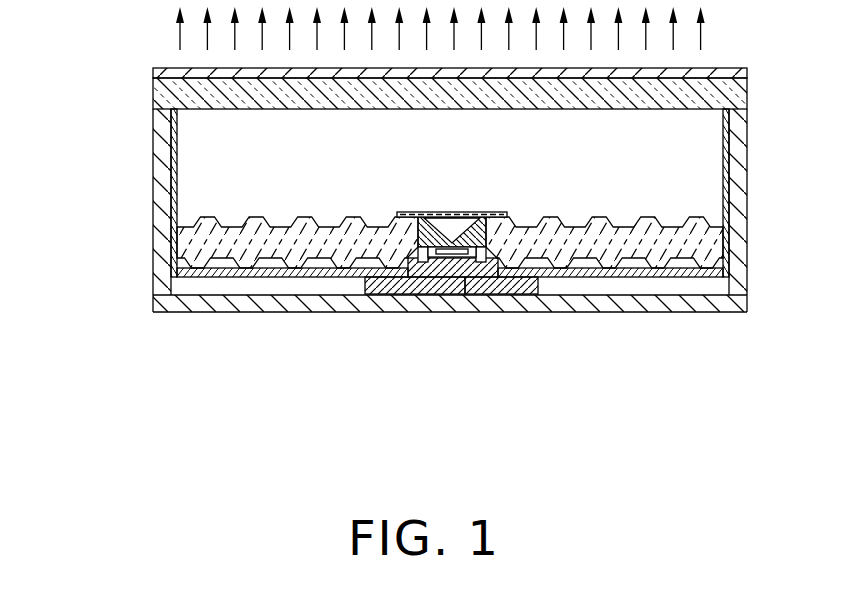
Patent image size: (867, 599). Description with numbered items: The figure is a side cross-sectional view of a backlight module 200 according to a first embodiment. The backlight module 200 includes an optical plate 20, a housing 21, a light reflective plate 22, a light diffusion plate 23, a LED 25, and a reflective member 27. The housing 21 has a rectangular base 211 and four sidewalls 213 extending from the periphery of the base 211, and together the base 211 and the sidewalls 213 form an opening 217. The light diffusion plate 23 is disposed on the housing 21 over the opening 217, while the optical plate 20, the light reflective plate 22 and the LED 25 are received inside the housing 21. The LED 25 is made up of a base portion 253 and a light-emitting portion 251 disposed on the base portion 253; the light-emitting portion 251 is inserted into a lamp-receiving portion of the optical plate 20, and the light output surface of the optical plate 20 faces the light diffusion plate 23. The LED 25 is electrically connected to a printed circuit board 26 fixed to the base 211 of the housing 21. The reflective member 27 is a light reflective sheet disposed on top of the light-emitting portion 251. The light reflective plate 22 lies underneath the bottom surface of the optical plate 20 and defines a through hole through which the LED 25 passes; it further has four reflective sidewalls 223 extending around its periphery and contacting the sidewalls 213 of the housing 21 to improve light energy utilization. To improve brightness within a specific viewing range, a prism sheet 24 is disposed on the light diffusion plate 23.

The backlight module 200 is at (133, 33).
The optical plate 20 is at (683, 248).
The housing 21 is at (428, 229).
The base 211 is at (203, 303).
The sidewalls 213 is at (153, 245).
The opening 217 is at (712, 145).
The reflective sidewalls 223 is at (738, 170).
The light reflective plate 22 is at (702, 268).
The light diffusion plate 23 is at (737, 92).
The prism sheet 24 is at (720, 72).
The LED 25 is at (432, 334).
The light-emitting portion 251 is at (398, 277).
The base portion 253 is at (462, 277).
The printed circuit board 26 is at (363, 287).
The reflective member 27 is at (507, 218).